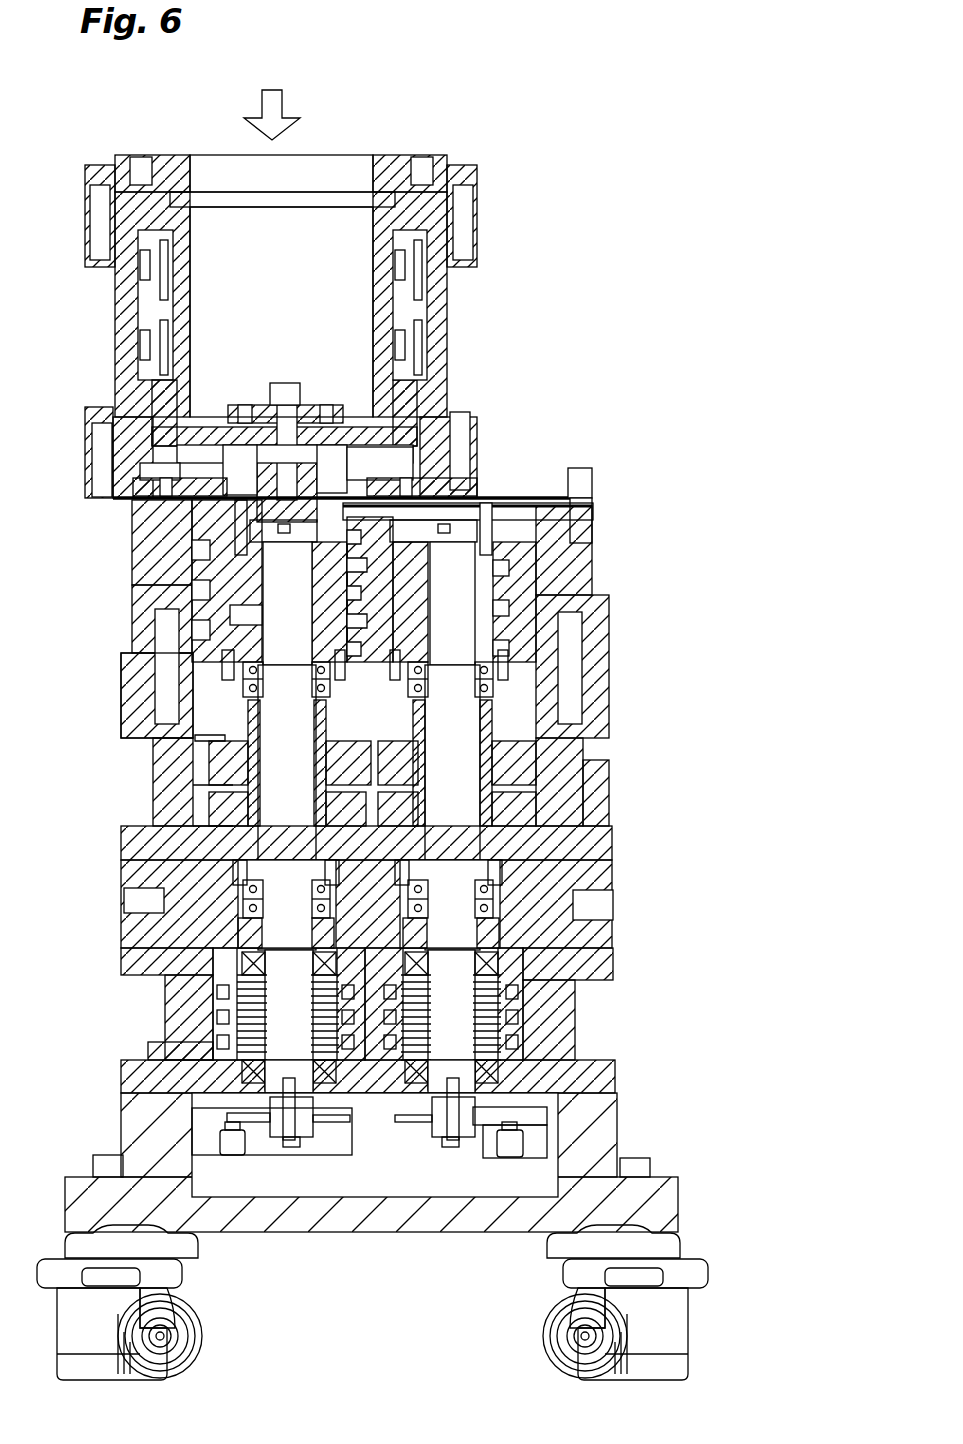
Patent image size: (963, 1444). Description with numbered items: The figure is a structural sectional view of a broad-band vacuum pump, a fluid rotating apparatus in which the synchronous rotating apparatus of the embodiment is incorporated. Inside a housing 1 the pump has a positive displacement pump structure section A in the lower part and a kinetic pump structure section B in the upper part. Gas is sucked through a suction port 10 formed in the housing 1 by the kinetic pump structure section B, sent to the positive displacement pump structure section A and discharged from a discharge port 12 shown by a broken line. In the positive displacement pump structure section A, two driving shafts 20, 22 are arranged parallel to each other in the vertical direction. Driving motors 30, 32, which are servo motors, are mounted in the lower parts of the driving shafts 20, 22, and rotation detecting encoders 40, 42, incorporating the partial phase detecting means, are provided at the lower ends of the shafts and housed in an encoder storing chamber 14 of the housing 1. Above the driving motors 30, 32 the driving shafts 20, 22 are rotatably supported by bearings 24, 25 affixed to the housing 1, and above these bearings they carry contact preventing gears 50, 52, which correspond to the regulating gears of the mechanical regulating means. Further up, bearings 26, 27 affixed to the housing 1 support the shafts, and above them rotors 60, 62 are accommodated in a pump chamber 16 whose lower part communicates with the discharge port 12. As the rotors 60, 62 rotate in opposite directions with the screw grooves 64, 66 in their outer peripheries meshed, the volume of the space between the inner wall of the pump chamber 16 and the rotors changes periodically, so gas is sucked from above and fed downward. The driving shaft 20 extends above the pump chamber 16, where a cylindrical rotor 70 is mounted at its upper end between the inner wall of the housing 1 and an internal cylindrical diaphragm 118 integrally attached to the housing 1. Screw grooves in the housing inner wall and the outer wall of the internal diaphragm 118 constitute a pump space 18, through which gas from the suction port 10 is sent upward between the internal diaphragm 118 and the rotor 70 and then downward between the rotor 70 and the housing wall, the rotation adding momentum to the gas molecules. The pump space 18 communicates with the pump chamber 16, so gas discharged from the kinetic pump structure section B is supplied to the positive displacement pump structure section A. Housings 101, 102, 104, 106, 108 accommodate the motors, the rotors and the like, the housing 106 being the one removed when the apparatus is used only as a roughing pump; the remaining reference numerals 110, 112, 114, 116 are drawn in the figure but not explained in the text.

The housing 1 is at (108, 693).
The suction port 10 is at (327, 170).
The discharge port 12 is at (365, 735).
The encoder storing chamber 14 is at (373, 1175).
The pump chamber 16 is at (478, 505).
The pump space 18 is at (400, 357).
The driving shaft 20 is at (273, 816).
The driving shaft 22 is at (598, 852).
The bearing 24 is at (252, 903).
The bearing 25 is at (500, 903).
The bearing 26 is at (215, 665).
The bearing 27 is at (505, 688).
The driving motor 30 is at (246, 1022).
The driving motor 32 is at (615, 1083).
The rotation detecting encoder 40 is at (290, 1147).
The rotation detecting encoder 42 is at (455, 1147).
The contact preventing gear 50 is at (198, 773).
The contact preventing gear 52 is at (525, 770).
The rotor 60 is at (175, 540).
The rotor 62 is at (530, 575).
The screw groove 64 is at (190, 590).
The screw groove 66 is at (548, 600).
The rotor 70 is at (140, 380).
The housing 101 is at (617, 1120).
The housing 102 is at (577, 995).
The housing 104 is at (580, 910).
The housing 106 is at (590, 800).
The housing 108 is at (604, 625).
The top plate 110 is at (515, 490).
The flange 112 is at (447, 307).
The bolt 114 is at (393, 157).
The casters 116 is at (196, 1360).
The internal cylindrical diaphragm 118 is at (195, 283).
The positive displacement pump structure section A is at (170, 572).
The kinetic pump structure section B is at (145, 320).